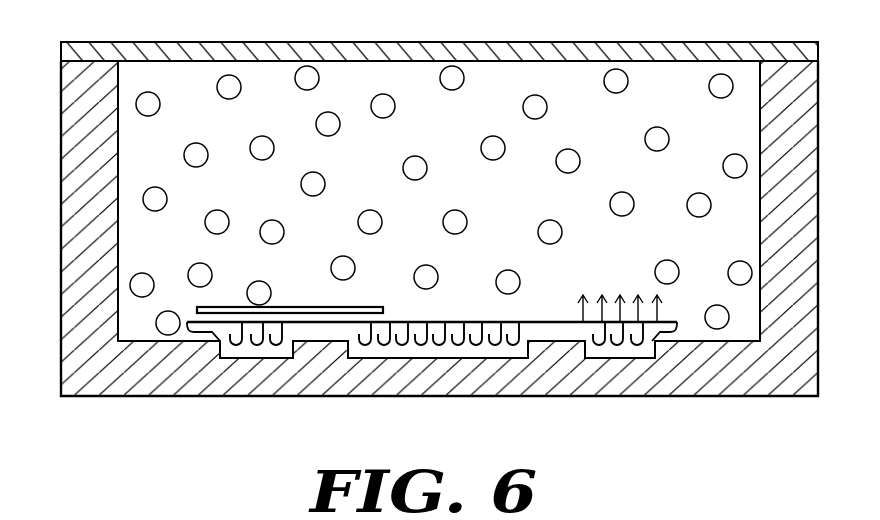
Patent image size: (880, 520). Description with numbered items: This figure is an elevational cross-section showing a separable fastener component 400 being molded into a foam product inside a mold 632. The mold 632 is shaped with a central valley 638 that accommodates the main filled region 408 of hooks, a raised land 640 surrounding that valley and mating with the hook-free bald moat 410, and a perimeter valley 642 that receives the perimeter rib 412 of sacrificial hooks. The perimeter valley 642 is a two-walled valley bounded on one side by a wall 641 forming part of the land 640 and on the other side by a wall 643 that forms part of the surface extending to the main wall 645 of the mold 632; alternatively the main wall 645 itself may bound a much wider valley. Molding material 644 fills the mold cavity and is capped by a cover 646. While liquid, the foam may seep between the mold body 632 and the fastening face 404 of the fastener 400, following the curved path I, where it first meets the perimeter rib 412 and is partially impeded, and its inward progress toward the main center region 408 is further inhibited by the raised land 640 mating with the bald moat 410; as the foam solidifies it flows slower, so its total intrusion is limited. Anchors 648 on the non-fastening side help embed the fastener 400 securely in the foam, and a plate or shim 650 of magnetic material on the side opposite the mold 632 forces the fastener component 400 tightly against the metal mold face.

The mold 632 is at (88, 366).
The cover 646 is at (461, 46).
The main wall of the mold 645 is at (759, 240).
The molding material 644 is at (482, 198).
The fastener component 400 is at (437, 299).
The plate or shim 650 is at (276, 306).
The bald moat 410 is at (306, 333).
The curved path I is at (187, 322).
The perimeter rib 412 is at (233, 343).
The main filled region 408 is at (435, 323).
The wall 643 is at (676, 332).
The anchors 648 is at (637, 312).
The raised land 640 is at (322, 345).
The fastening face 404 is at (295, 326).
The perimeter valley 642 is at (220, 360).
The central valley 638 is at (438, 353).
The wall 641 is at (588, 356).